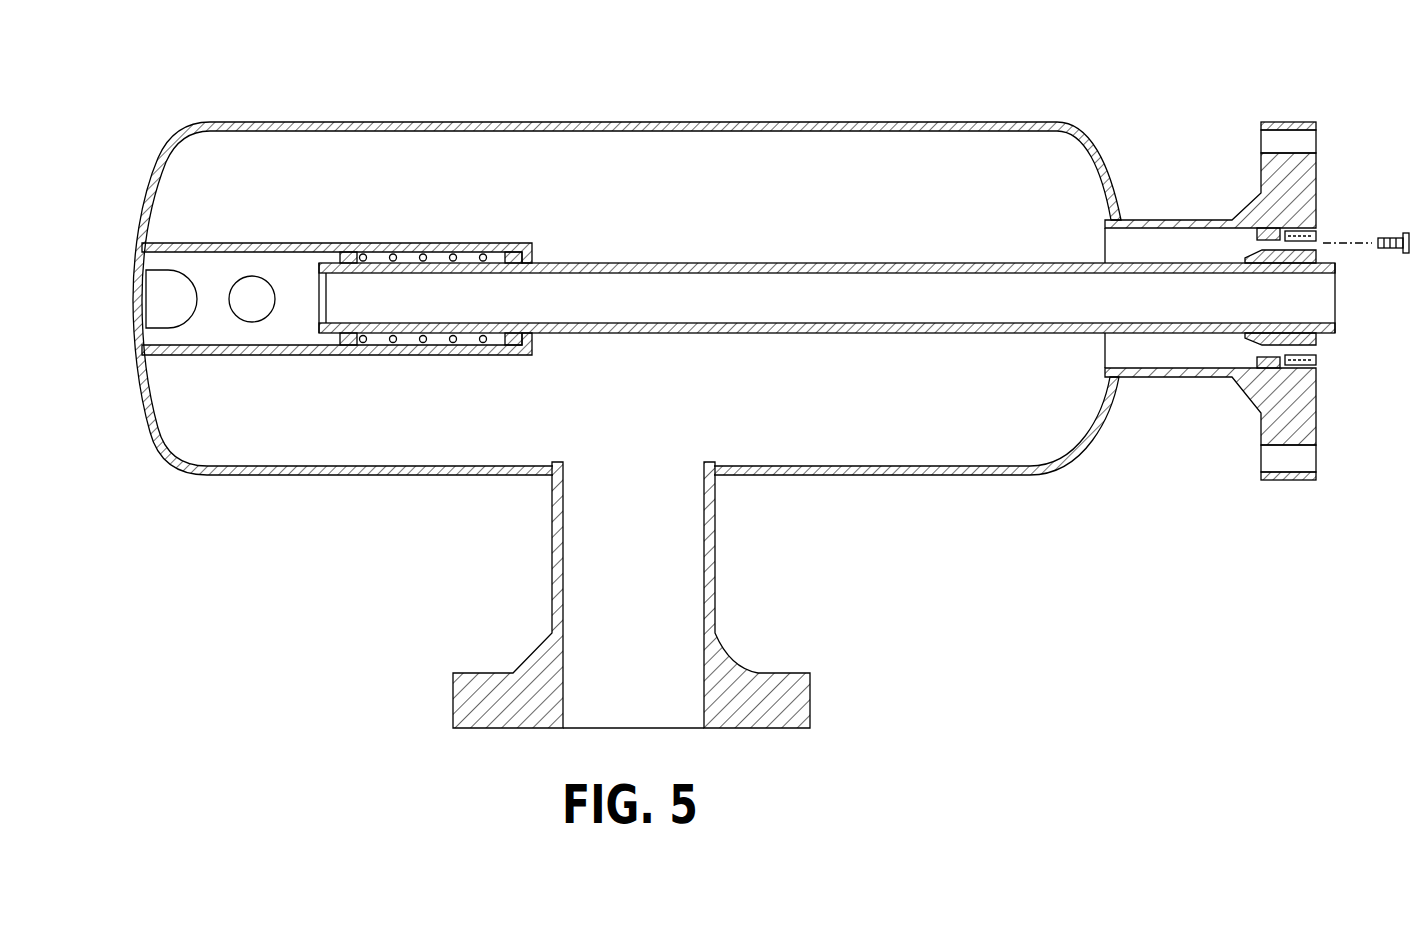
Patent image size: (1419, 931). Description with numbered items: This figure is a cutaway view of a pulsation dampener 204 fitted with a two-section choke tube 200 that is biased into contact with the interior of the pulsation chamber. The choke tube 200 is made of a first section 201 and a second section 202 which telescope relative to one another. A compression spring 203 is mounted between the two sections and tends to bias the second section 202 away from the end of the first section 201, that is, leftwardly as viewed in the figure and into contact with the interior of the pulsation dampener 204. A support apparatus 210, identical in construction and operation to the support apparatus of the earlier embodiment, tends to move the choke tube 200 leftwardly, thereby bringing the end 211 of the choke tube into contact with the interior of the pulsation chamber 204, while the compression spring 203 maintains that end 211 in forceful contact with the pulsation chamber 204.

The choke tube 200 is at (731, 397).
The first section 201 is at (915, 263).
The second section 202 is at (433, 243).
The compression spring 203 is at (393, 347).
The pulsation dampener 204 is at (560, 122).
The support apparatus 210 is at (1258, 212).
The end 211 is at (135, 258).